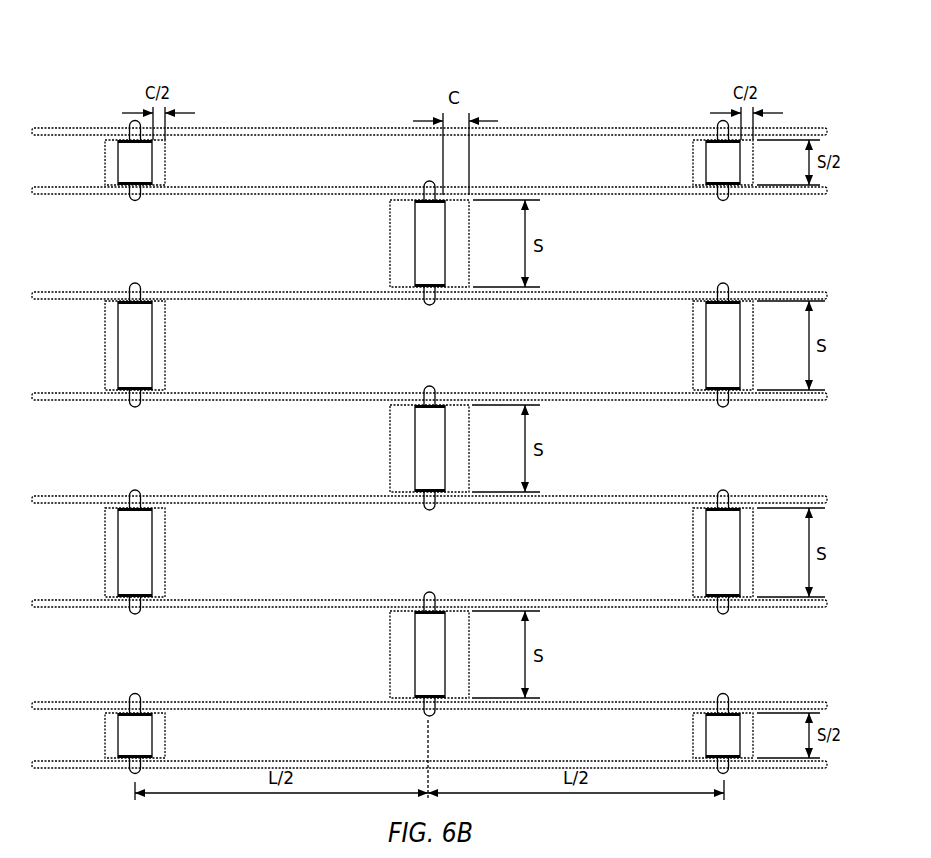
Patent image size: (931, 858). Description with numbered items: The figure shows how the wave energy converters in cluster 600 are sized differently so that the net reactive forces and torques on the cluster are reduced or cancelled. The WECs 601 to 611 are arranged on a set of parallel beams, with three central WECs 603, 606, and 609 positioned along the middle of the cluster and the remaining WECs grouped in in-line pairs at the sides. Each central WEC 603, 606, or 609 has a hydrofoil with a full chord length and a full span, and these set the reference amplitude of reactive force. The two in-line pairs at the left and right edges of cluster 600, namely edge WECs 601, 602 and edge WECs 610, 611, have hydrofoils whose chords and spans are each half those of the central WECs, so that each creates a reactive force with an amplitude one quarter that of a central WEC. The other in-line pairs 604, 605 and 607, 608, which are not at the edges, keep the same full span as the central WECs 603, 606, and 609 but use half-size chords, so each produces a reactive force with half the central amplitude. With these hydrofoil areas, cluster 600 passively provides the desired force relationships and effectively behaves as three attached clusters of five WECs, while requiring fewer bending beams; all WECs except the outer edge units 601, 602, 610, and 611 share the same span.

The cluster 600 is at (230, 46).
The edge WEC 601 is at (698, 745).
The edge WEC 602 is at (110, 752).
The central WEC 603 is at (392, 668).
The in-line WEC 604 is at (698, 562).
The in-line WEC 605 is at (110, 562).
The central WEC 606 is at (398, 462).
The in-line WEC 607 is at (698, 362).
The in-line WEC 608 is at (110, 362).
The central WEC 609 is at (393, 265).
The edge WEC 610 is at (698, 172).
The edge WEC 611 is at (110, 172).